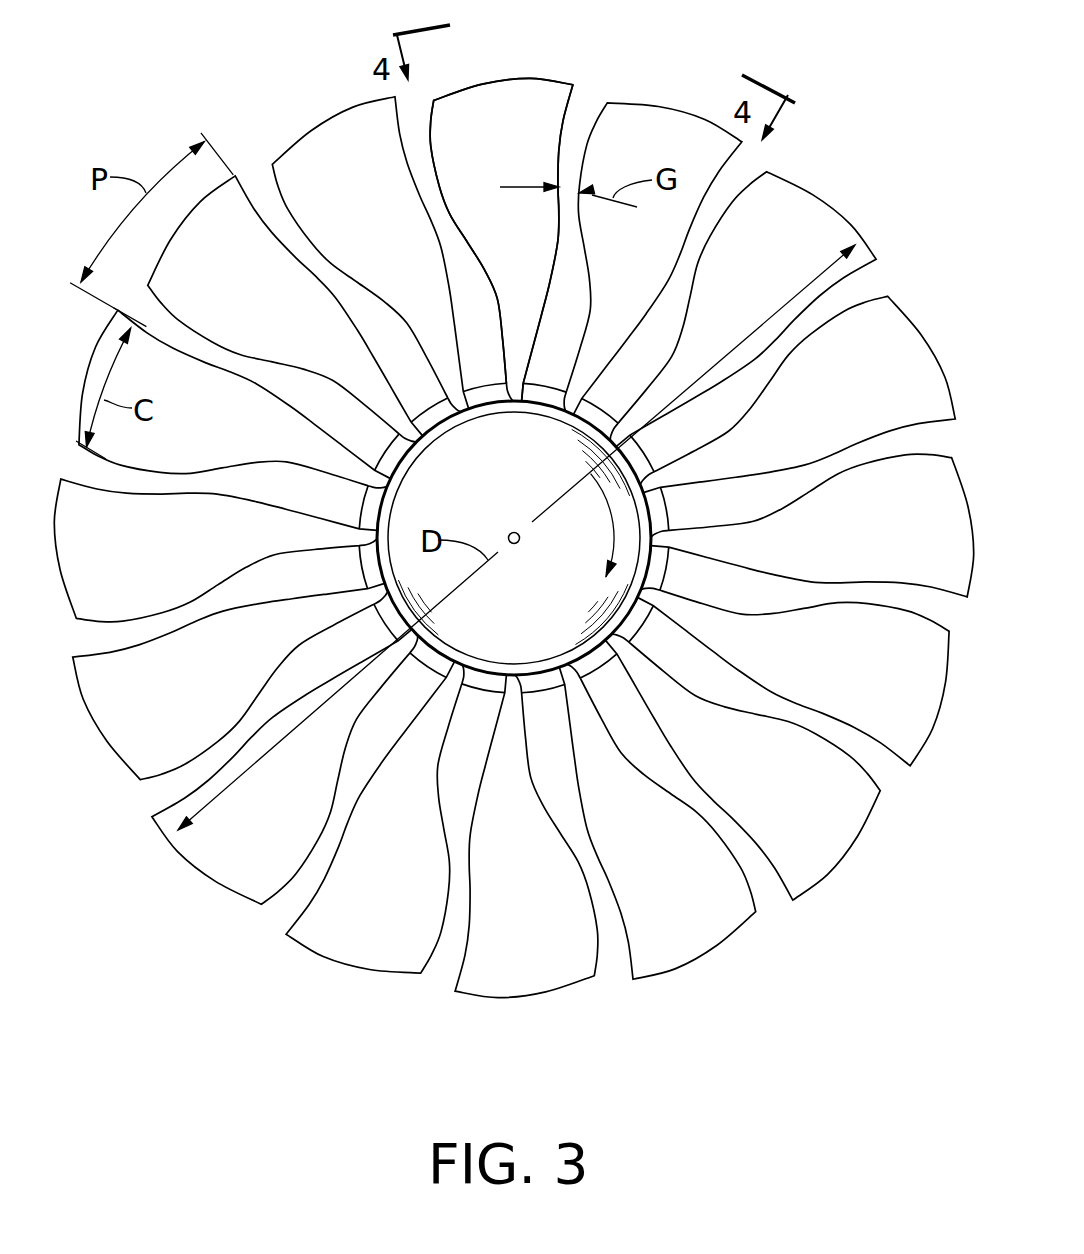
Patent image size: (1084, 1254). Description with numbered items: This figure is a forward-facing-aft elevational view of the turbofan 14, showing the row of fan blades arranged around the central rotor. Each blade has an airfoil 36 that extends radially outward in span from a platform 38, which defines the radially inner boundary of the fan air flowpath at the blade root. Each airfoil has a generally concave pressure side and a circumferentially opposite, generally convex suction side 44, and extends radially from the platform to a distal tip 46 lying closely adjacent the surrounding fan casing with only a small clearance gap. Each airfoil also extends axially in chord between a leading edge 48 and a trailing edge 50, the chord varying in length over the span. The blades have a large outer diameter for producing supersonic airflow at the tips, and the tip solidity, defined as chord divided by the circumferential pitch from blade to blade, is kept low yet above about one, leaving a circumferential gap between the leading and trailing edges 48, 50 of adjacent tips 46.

The turbofan 14 is at (830, 126).
The airfoil 36 is at (922, 372).
The platform 38 is at (672, 448).
The suction side 44 is at (776, 290).
The tip 46 is at (517, 216).
The leading edge 48 is at (559, 231).
The trailing edge 50 is at (486, 275).